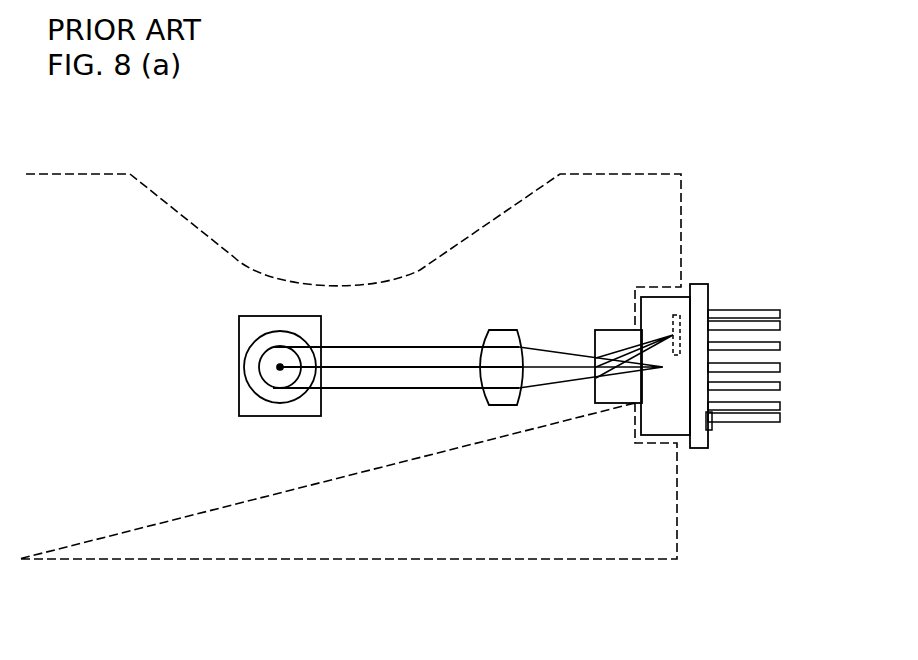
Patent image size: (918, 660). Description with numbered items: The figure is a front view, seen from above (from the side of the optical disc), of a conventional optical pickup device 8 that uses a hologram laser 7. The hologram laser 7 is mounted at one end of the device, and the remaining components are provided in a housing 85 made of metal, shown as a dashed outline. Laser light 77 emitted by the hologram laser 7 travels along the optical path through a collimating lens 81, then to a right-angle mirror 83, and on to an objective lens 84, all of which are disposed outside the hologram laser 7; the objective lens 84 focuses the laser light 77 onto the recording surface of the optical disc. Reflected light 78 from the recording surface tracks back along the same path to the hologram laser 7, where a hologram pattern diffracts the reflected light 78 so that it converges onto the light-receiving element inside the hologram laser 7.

The optical pickup device 8 is at (288, 124).
The housing 85 is at (138, 560).
The right-angle mirror 83 is at (284, 317).
The objective lens 84 is at (298, 340).
The laser light 77 is at (397, 388).
The collimating lens 81 is at (503, 406).
The reflected light 78 is at (623, 350).
The hologram laser 7 is at (713, 270).